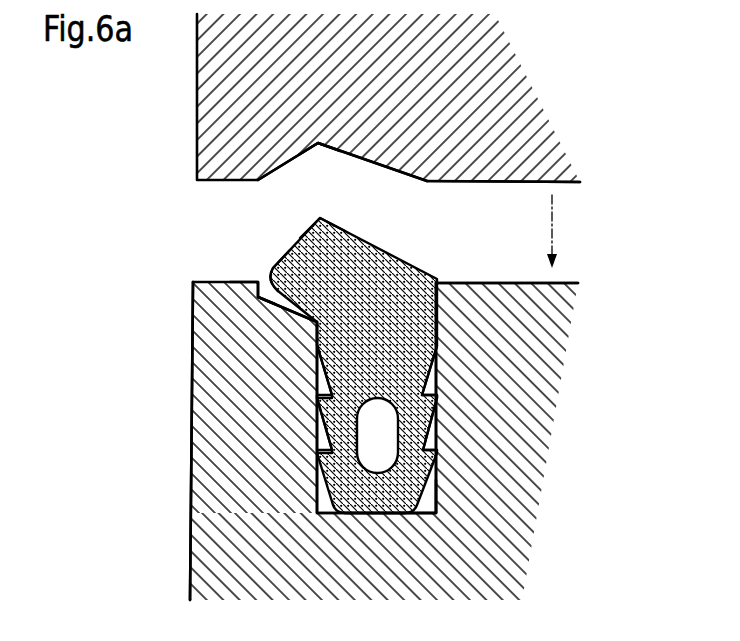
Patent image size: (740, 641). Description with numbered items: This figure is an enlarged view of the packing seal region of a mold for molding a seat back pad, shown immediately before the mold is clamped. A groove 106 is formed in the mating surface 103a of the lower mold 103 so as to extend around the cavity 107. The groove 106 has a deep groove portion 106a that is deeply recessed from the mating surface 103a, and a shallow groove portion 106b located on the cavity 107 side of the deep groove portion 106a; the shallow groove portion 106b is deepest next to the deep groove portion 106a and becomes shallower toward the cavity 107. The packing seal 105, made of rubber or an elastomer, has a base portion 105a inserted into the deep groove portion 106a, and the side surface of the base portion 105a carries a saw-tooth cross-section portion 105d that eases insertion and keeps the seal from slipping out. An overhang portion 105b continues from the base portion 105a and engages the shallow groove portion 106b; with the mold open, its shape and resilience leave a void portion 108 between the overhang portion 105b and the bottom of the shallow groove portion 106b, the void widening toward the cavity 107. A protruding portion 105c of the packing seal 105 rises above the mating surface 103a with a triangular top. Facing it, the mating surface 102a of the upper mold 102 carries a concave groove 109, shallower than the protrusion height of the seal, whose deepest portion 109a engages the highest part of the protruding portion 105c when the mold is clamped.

The upper mold 102 is at (540, 98).
The mating surface of the upper mold 102a is at (579, 184).
The lower mold 103 is at (558, 397).
The mating surface of the lower mold 103a is at (563, 283).
The packing seal 105 is at (403, 252).
The base portion 105a is at (377, 513).
The overhang portion 105b is at (273, 266).
The protruding portion 105c is at (320, 218).
The saw-tooth cross-section portion 105d is at (317, 407).
The groove 106 is at (444, 445).
The deep groove portion 106a is at (432, 507).
The shallow groove portion 106b is at (279, 309).
The cavity 107 is at (120, 373).
The void portion 108 is at (267, 292).
The concave groove 109 is at (276, 174).
The deepest portion 109a is at (322, 142).